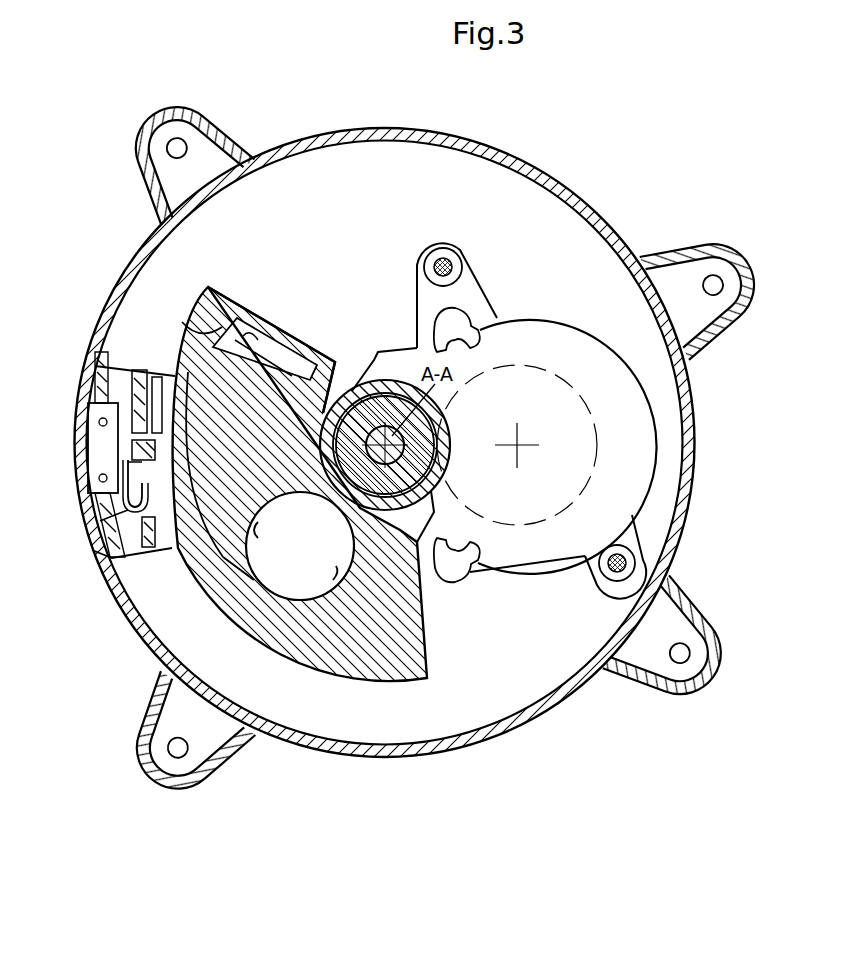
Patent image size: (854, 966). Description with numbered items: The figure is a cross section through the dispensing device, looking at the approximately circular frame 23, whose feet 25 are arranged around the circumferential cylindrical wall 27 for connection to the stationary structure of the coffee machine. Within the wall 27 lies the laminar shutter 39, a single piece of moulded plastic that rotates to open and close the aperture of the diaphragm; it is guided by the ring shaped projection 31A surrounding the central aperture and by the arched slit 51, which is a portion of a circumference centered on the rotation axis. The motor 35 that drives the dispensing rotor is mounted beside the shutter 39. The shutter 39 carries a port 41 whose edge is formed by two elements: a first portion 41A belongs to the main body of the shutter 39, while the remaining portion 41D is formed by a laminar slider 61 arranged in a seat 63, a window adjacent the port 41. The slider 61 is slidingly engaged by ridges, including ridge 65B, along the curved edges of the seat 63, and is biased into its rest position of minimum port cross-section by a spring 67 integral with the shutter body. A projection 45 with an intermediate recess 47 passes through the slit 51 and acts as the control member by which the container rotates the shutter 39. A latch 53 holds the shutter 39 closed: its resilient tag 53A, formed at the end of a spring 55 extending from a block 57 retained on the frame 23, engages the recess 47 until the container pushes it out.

The frame 23 is at (348, 766).
The feet 25 is at (200, 112).
The circumferential cylindrical wall 27 is at (450, 748).
The ring shaped projection 31A is at (355, 393).
The motor 35 is at (567, 350).
The shutter 39 is at (437, 667).
The port 41 is at (310, 558).
The first portion of the edge 41A is at (335, 582).
The remaining portion of the edge 41D is at (262, 532).
The projection 45 is at (152, 395).
The intermediate recess 47 is at (156, 449).
The arched slit 51 is at (178, 548).
The latch 53 is at (124, 497).
The resilient tag 53A is at (125, 463).
The spring 55 is at (98, 522).
The block 57 is at (96, 439).
The laminar slider 61 is at (249, 473).
The seat 63 is at (303, 343).
The ridge 65B is at (220, 330).
The spring 67 is at (252, 358).